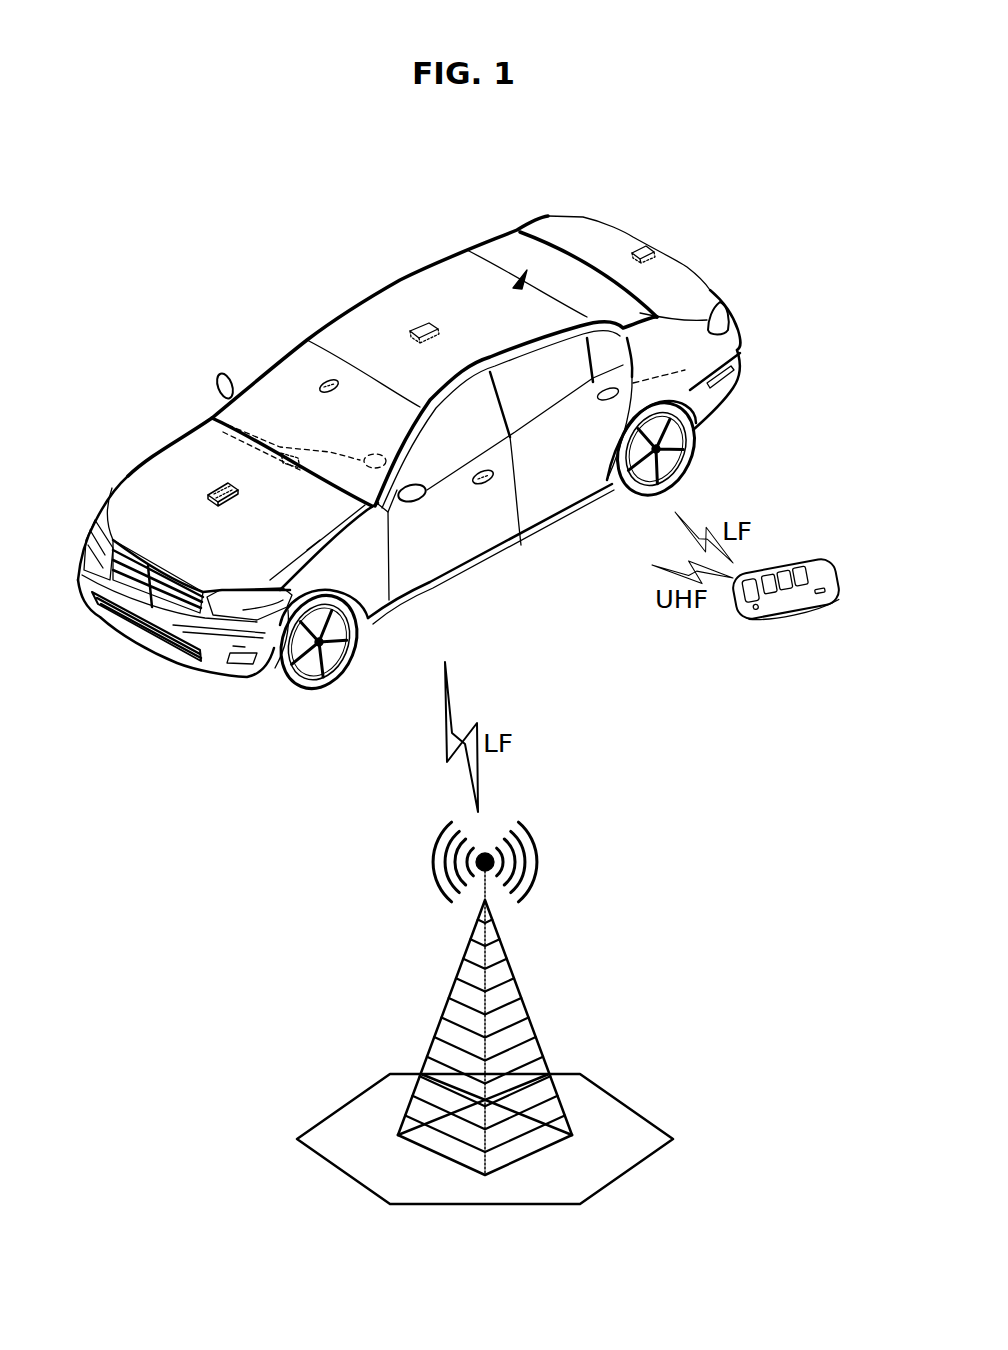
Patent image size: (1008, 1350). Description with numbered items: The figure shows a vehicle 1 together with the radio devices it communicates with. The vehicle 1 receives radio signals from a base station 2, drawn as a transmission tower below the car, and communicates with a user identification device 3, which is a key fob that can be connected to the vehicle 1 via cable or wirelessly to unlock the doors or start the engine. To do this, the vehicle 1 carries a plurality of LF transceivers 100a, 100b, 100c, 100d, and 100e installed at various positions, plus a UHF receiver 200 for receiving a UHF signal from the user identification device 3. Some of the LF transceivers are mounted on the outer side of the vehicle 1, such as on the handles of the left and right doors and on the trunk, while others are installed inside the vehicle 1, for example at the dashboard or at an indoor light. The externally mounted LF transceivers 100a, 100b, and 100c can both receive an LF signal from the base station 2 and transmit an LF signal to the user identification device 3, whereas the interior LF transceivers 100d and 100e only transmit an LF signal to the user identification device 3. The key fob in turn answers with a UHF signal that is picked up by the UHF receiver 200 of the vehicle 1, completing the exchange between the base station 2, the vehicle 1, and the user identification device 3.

The vehicle 1 is at (155, 261).
The base station 2 is at (519, 988).
The user identification device 3 is at (792, 600).
The LF transceiver 100a is at (323, 385).
The LF transceiver 100b is at (493, 478).
The LF transceiver 100c is at (641, 247).
The LF transceiver 100d is at (282, 455).
The LF transceiver 100e is at (413, 327).
The UHF receiver 200 is at (214, 485).